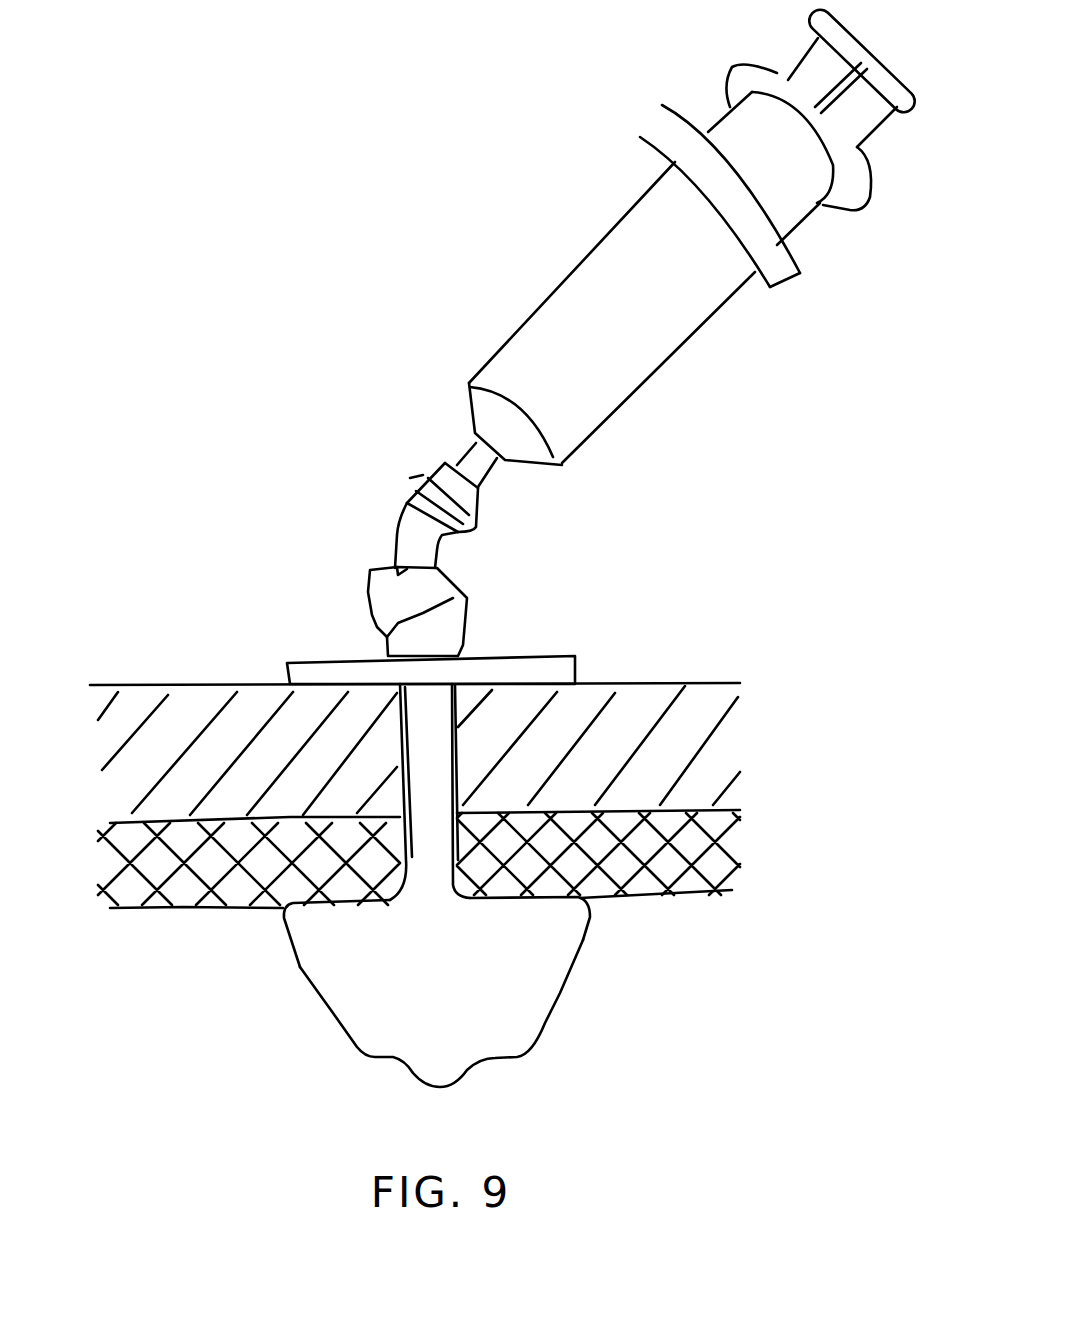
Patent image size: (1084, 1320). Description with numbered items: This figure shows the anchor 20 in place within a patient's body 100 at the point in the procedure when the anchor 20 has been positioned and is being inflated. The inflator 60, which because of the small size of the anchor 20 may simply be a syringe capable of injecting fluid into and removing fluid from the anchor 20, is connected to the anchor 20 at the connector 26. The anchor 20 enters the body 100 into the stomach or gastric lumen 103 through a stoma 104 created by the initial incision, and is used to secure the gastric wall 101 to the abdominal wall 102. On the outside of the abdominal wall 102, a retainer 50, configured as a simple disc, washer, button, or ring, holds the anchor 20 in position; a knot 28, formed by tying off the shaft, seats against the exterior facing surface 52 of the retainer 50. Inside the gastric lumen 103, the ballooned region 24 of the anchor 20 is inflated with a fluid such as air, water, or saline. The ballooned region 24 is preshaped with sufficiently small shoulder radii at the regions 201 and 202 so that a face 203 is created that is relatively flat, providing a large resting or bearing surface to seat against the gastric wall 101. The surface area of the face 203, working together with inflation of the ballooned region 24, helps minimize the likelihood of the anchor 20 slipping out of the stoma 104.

The inflator 60 is at (660, 330).
The connector 26 is at (485, 522).
The knot 28 is at (390, 595).
The retainer 50 is at (453, 625).
The exterior facing surface 52 is at (503, 655).
The body 100 is at (500, 795).
The gastric wall 101 is at (737, 873).
The abdominal wall 102 is at (740, 732).
The gastric lumen 103 is at (108, 1018).
The stoma 104 is at (403, 740).
The anchor 20 is at (484, 885).
The shoulder radius region 201 is at (395, 905).
The shoulder radius region 202 is at (273, 918).
The face 203 is at (528, 905).
The ballooned region 24 is at (352, 1013).